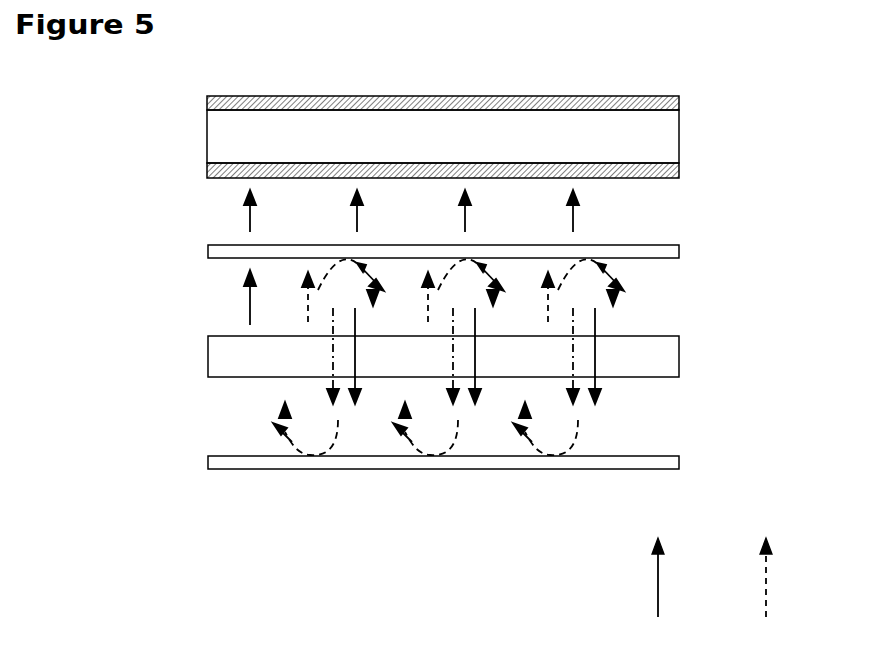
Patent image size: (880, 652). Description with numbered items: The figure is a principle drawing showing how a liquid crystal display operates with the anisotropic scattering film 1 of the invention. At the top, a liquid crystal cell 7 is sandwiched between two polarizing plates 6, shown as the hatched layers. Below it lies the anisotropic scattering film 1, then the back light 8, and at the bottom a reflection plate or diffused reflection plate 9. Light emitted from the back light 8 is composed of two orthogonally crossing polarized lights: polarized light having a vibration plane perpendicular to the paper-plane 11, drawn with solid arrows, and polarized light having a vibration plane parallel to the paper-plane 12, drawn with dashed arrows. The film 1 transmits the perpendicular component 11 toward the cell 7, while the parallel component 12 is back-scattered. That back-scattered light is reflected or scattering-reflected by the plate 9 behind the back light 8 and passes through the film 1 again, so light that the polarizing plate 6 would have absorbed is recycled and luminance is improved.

The anisotropic scattering film 1 is at (668, 252).
The polarizing plate 6 is at (667, 101).
The liquid crystal cell 7 is at (247, 134).
The back light 8 is at (670, 356).
The reflection plate or diffused reflection plate 9 is at (675, 462).
The polarized light having a vibration plane perpendicular to paper-plane 11 is at (685, 577).
The polarized light having a vibration plane parallel to paper-plane 12 is at (792, 577).